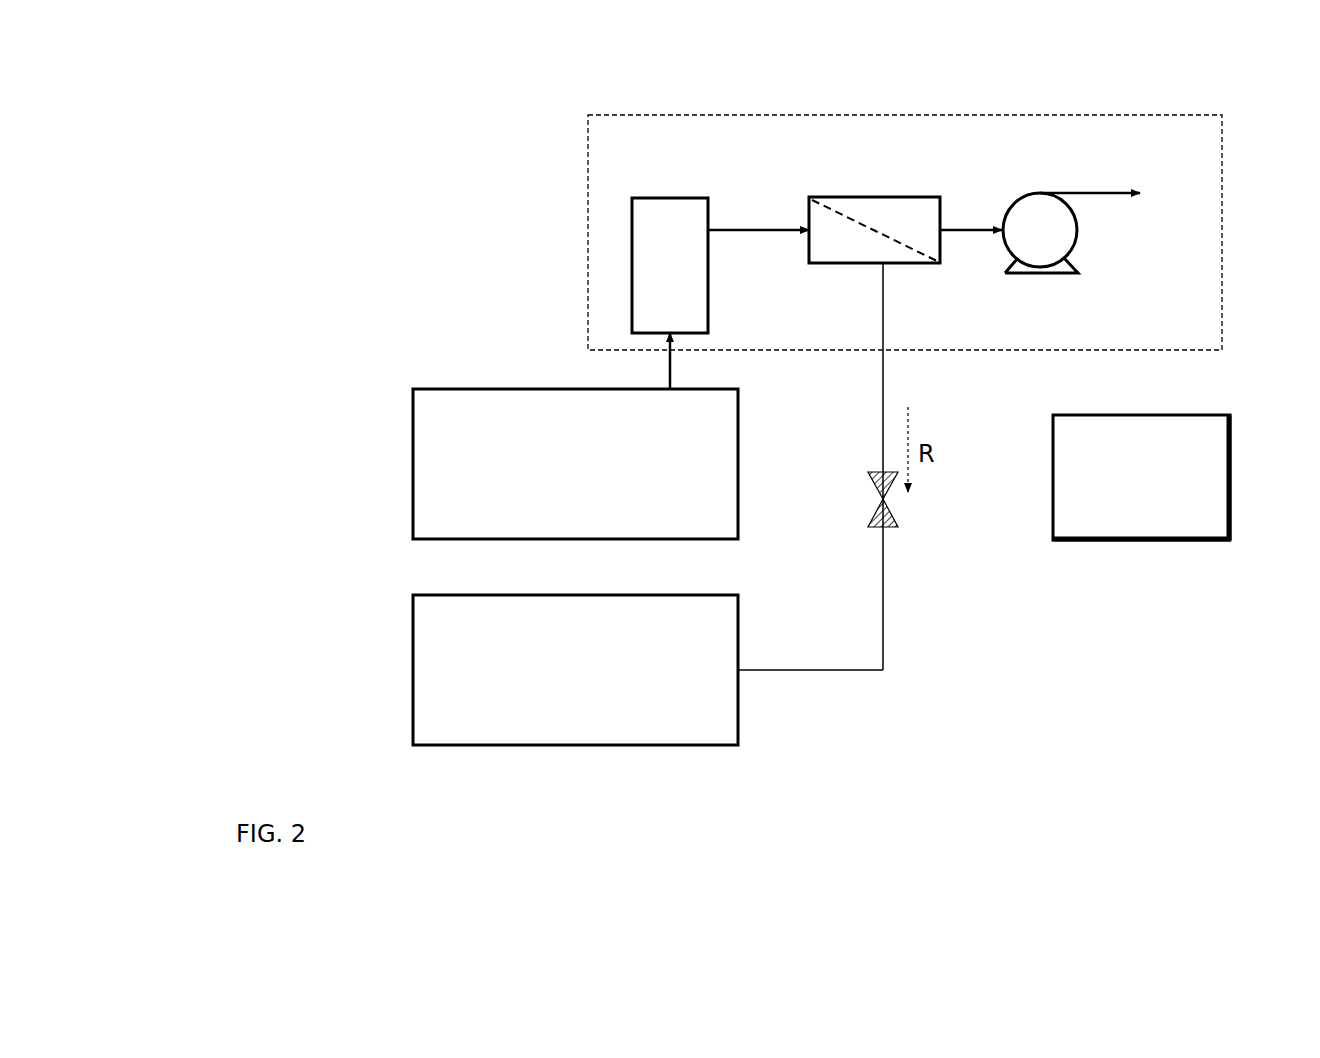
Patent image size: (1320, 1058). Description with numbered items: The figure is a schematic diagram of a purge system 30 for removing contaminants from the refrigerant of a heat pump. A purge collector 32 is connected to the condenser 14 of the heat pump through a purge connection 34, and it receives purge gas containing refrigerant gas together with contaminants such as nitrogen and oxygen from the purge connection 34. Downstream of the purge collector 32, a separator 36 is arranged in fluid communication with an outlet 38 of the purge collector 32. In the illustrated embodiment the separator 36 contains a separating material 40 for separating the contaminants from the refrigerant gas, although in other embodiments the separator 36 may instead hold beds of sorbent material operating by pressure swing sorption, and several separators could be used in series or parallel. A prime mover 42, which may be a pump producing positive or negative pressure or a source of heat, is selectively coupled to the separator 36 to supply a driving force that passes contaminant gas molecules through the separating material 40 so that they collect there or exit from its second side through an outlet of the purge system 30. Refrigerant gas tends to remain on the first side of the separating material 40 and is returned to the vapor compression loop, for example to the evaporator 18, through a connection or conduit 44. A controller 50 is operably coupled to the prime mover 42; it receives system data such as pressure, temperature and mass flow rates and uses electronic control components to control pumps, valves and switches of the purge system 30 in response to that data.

The condenser 14 is at (507, 389).
The evaporator 18 is at (413, 674).
The purge system 30 is at (588, 160).
The purge collector 32 is at (668, 198).
The purge connection 34 is at (671, 375).
The separator 36 is at (809, 204).
The outlet 38 is at (712, 228).
The separating material 40 is at (876, 232).
The prime mover 42 is at (1040, 193).
The connection or conduit 44 is at (884, 560).
The controller 50 is at (1165, 542).